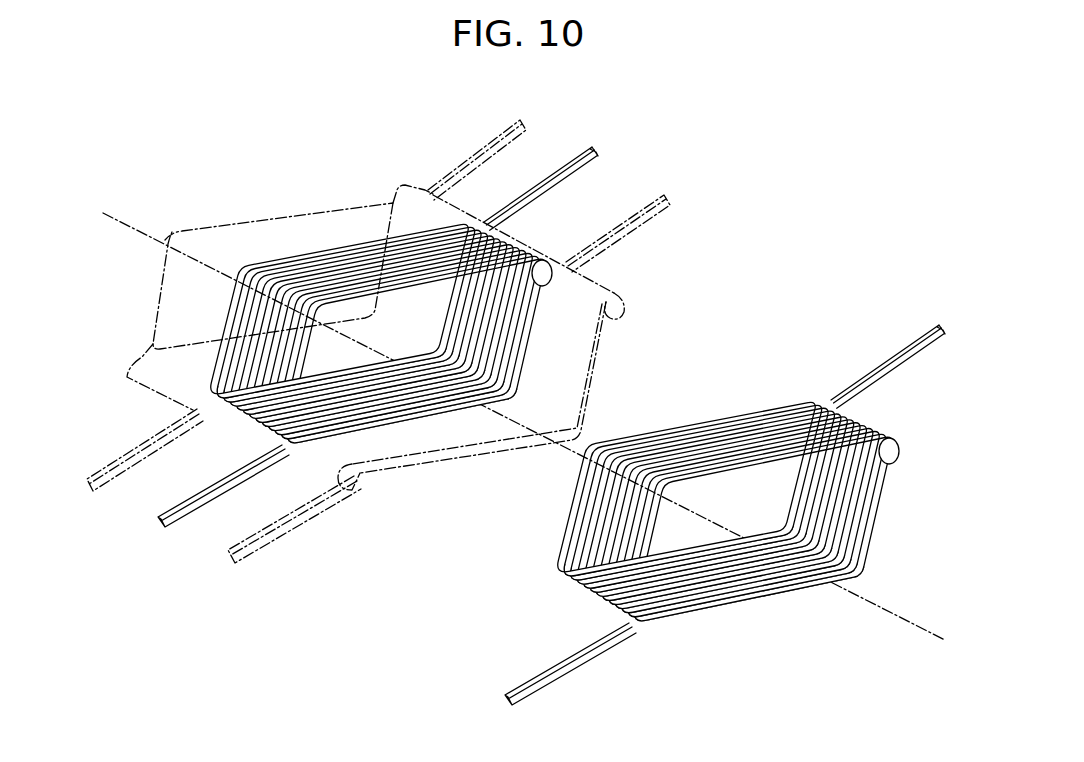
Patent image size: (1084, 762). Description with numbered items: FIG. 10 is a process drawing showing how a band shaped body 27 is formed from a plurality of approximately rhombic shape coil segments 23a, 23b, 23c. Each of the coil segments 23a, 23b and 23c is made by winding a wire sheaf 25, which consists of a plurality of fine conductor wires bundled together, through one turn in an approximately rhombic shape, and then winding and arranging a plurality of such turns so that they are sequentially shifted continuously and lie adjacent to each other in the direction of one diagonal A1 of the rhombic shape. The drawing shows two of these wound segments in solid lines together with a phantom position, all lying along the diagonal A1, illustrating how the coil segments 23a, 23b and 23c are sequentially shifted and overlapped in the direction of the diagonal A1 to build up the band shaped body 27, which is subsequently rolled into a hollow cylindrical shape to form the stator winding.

The band shaped body 27 is at (409, 150).
The coil segment 23c is at (470, 202).
The coil segment 23a is at (540, 243).
The coil segment 23b is at (612, 283).
The wire sheaf 25 is at (544, 581).
The diagonal A1 is at (903, 600).